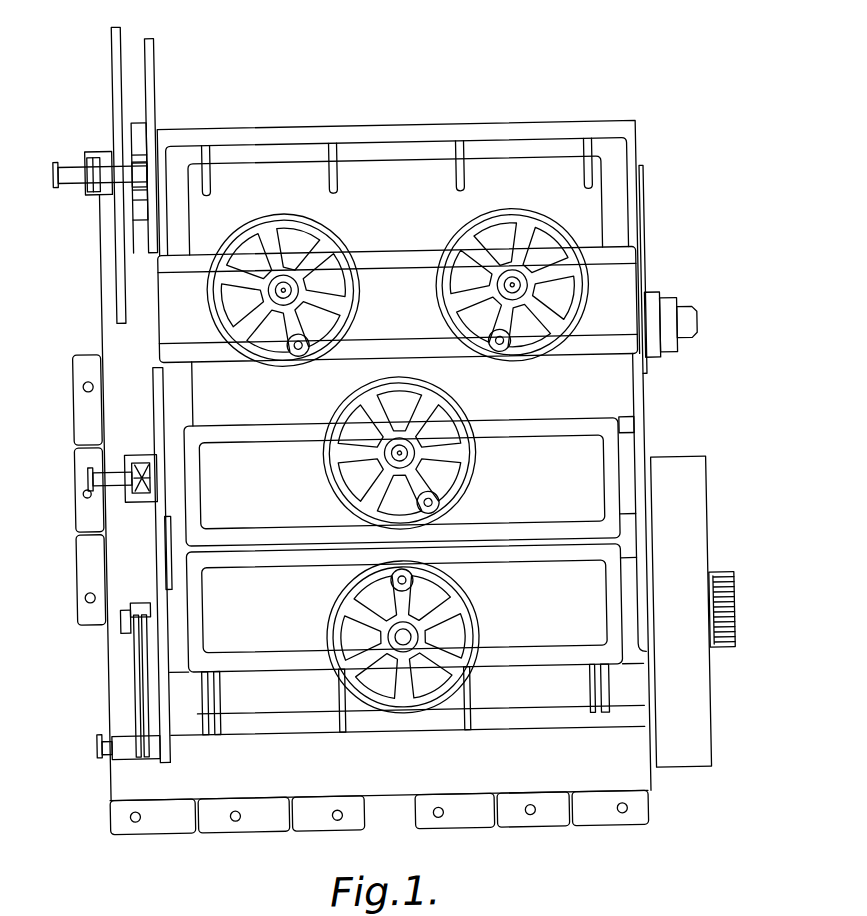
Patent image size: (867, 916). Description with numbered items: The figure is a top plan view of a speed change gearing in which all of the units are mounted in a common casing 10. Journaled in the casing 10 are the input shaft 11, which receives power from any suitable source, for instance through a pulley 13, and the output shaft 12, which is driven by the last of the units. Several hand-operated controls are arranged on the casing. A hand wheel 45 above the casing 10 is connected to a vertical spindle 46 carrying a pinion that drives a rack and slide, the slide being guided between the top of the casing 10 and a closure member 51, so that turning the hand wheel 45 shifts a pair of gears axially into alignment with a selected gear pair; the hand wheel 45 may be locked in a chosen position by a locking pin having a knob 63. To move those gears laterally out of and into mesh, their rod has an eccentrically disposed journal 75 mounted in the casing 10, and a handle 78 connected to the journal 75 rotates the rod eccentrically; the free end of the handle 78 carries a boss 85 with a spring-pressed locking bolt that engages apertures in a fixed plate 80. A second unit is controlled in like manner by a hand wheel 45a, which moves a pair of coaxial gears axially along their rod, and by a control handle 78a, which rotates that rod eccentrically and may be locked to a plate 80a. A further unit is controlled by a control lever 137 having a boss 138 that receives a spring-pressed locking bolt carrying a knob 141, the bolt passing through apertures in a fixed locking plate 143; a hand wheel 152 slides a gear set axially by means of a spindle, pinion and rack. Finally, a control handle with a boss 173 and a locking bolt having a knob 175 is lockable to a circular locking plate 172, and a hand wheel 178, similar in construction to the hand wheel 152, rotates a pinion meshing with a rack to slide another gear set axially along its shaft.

The casing 10 is at (636, 402).
The input shaft 11 is at (752, 616).
The output shaft 12 is at (715, 322).
The pulley 13 is at (722, 754).
The hand wheel 45 is at (455, 588).
The hand wheel 45a is at (465, 476).
The vertical spindle 46 is at (409, 637).
The closure member 51 is at (262, 630).
The knob 63 is at (390, 580).
The eccentrically disposed journal 75 is at (119, 623).
The handle 78 is at (133, 677).
The control handle 78a is at (125, 495).
The fixed plate 80 is at (162, 758).
The plate 80a is at (165, 568).
The boss 85 is at (117, 745).
The control lever 137 is at (149, 165).
The boss 138 is at (102, 199).
The knob 141 is at (103, 127).
The fixed locking plate 143 is at (180, 63).
The hand wheel 152 is at (293, 221).
The circular locking plate 172 is at (122, 273).
The boss 173 is at (73, 162).
The knob 175 is at (53, 201).
The hand wheel 178 is at (533, 214).